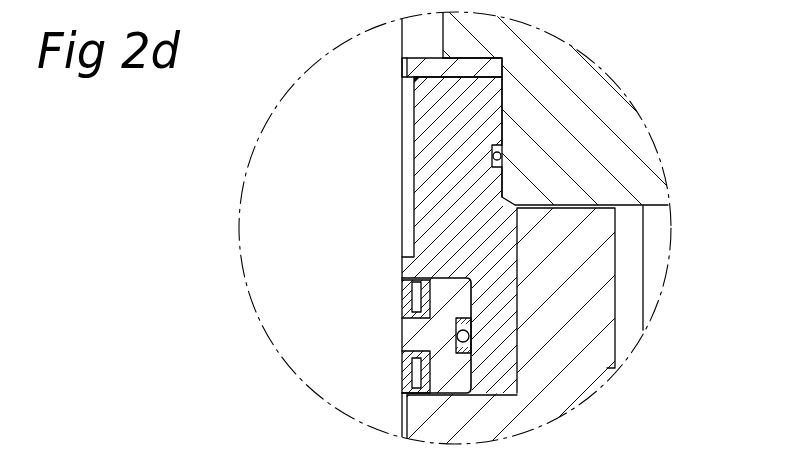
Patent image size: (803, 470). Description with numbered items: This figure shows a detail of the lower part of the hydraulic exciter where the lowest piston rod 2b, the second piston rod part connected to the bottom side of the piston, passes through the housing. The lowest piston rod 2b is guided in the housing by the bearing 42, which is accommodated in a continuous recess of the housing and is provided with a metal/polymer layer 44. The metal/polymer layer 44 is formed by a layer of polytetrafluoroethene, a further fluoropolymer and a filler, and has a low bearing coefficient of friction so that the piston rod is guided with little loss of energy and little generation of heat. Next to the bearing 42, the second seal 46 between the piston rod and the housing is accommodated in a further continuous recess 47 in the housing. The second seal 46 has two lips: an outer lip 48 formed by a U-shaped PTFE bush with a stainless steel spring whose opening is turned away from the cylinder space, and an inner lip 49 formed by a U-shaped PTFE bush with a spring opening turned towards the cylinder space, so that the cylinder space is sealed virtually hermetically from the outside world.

The lowest piston rod 2b is at (312, 113).
The bearing 42 is at (547, 137).
The metal/polymer layer 44 is at (402, 160).
The second seal 46 is at (394, 336).
The continuous recess 47 is at (512, 355).
The outer lip 48 is at (402, 358).
The inner lip 49 is at (402, 300).